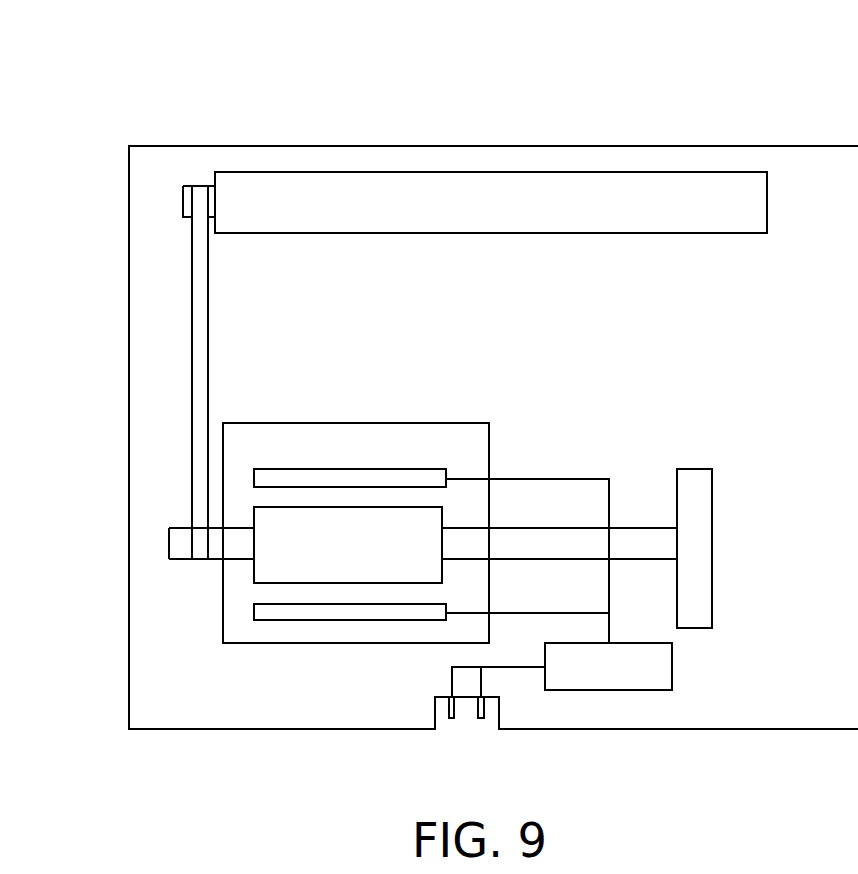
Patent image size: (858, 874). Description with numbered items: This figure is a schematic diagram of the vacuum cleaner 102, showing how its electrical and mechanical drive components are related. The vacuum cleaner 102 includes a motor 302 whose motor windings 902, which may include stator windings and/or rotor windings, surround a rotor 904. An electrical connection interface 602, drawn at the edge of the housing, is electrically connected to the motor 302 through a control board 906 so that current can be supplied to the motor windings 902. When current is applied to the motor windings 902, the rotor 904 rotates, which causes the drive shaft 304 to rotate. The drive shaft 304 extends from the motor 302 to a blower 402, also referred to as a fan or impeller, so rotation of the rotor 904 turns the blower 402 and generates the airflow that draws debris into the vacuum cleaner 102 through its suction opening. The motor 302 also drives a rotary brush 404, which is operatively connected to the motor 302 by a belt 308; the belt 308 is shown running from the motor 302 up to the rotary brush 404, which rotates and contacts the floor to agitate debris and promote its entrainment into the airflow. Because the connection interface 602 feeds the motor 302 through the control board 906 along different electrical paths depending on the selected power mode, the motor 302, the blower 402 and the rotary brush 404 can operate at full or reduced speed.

The vacuum cleaner 102 is at (113, 92).
The motor 302 is at (405, 400).
The drive shaft 304 is at (635, 528).
The belt 308 is at (191, 335).
The blower 402 is at (712, 546).
The rotary brush 404 is at (617, 188).
The electrical connection interface 602 is at (437, 722).
The motor windings 902 is at (323, 470).
The rotor 904 is at (368, 560).
The control board 906 is at (637, 680).